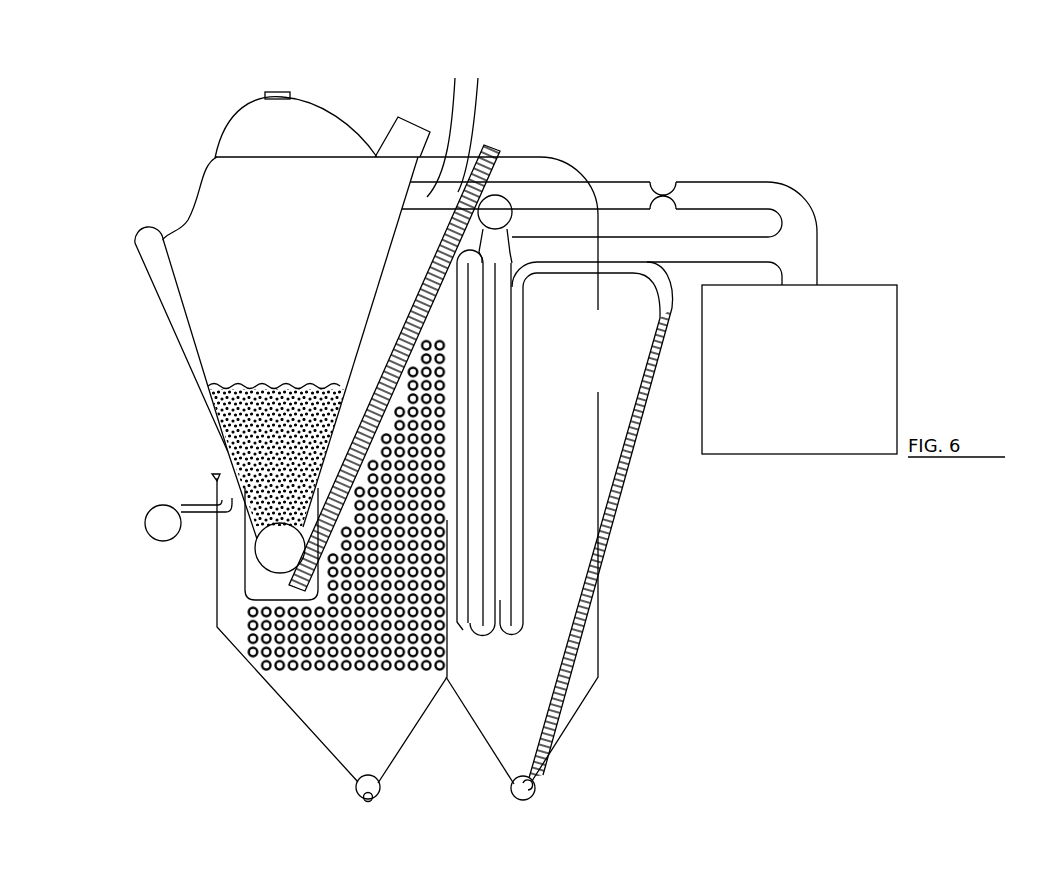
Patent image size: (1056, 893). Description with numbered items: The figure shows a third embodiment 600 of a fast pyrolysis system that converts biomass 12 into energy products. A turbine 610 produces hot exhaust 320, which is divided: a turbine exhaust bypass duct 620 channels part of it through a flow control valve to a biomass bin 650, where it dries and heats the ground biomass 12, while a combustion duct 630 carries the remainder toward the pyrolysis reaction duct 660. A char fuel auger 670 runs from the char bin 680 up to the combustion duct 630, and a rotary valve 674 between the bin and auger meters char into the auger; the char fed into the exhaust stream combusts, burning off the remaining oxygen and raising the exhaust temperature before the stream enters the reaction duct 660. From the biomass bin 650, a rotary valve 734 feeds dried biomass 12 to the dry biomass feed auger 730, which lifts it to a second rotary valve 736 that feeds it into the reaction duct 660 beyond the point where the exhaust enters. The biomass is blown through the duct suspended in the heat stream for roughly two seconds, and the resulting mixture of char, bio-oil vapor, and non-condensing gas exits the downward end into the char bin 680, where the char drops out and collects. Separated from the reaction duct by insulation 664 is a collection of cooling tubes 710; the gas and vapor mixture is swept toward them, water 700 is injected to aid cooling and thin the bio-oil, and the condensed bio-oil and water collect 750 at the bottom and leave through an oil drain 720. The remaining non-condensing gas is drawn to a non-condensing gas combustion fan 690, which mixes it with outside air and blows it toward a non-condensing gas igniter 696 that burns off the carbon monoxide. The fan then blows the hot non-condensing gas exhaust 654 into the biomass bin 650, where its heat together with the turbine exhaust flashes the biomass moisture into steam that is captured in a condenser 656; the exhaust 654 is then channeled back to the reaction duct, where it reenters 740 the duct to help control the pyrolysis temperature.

The third embodiment of fast pyrolysis system 600 is at (88, 233).
The biomass 12 is at (270, 459).
The turbine exhaust 320 is at (893, 253).
The turbine 610 is at (783, 394).
The turbine exhaust bypass duct 620 is at (417, 74).
The combustion duct 630 is at (533, 268).
The biomass bin 650 is at (267, 336).
The non-condensing gas exhaust 654 is at (400, 137).
The condenser 656 is at (265, 97).
The pyrolysis reaction duct 660 is at (487, 632).
The insulation 664 is at (457, 513).
The char fuel auger 670 is at (634, 468).
The rotary valve 674 is at (536, 797).
The char bin 680 is at (496, 736).
The non-condensing gas combustion fan 690 is at (160, 504).
The non-condensing gas igniter 696 is at (217, 472).
The water 700 is at (418, 232).
The cooling tubes 710 is at (260, 686).
The oil drain 720 is at (288, 836).
The dry biomass feed auger 730 is at (470, 73).
The rotary valve 734 is at (256, 557).
The second rotary valve 736 is at (510, 198).
The reentry of non-condensing gas exhaust 740 is at (573, 237).
The bio-oil collection 750 is at (345, 766).